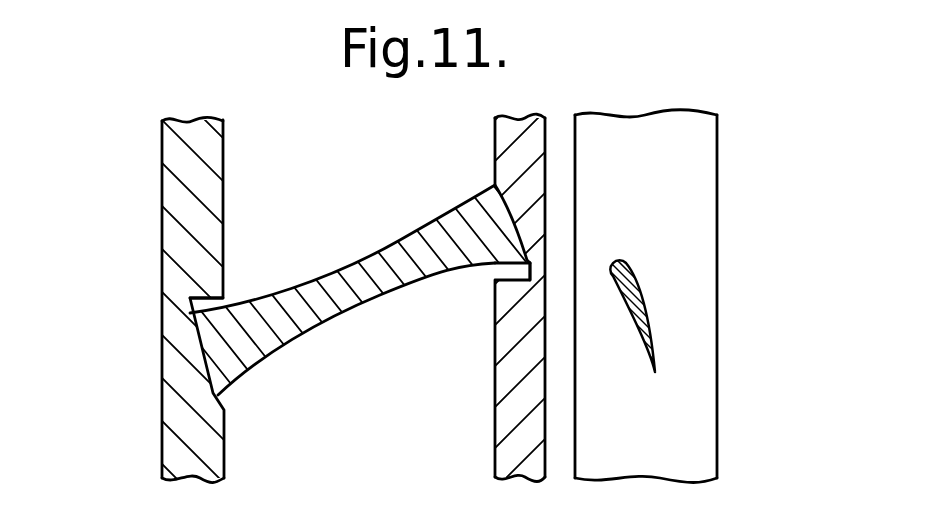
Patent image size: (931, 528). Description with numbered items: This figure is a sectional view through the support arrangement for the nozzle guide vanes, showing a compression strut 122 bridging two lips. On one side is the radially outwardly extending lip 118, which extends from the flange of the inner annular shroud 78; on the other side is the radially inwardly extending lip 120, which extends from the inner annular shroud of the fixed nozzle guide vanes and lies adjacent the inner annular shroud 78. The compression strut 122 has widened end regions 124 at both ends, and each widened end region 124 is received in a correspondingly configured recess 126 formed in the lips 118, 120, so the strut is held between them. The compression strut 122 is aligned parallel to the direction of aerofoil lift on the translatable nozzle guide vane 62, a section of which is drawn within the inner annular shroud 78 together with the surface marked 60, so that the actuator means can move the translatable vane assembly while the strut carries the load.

The airfoil surface / flow surface 60 is at (690, 275).
The translatable nozzle guide vane 62 is at (655, 342).
The inner annular shroud 78 is at (697, 160).
The radially outwardly extending lip 118 is at (183, 447).
The radially inwardly extending lip 120 is at (512, 155).
The compression strut 122 is at (280, 342).
The widened end region 124 is at (238, 323).
The recess 126 is at (190, 300).